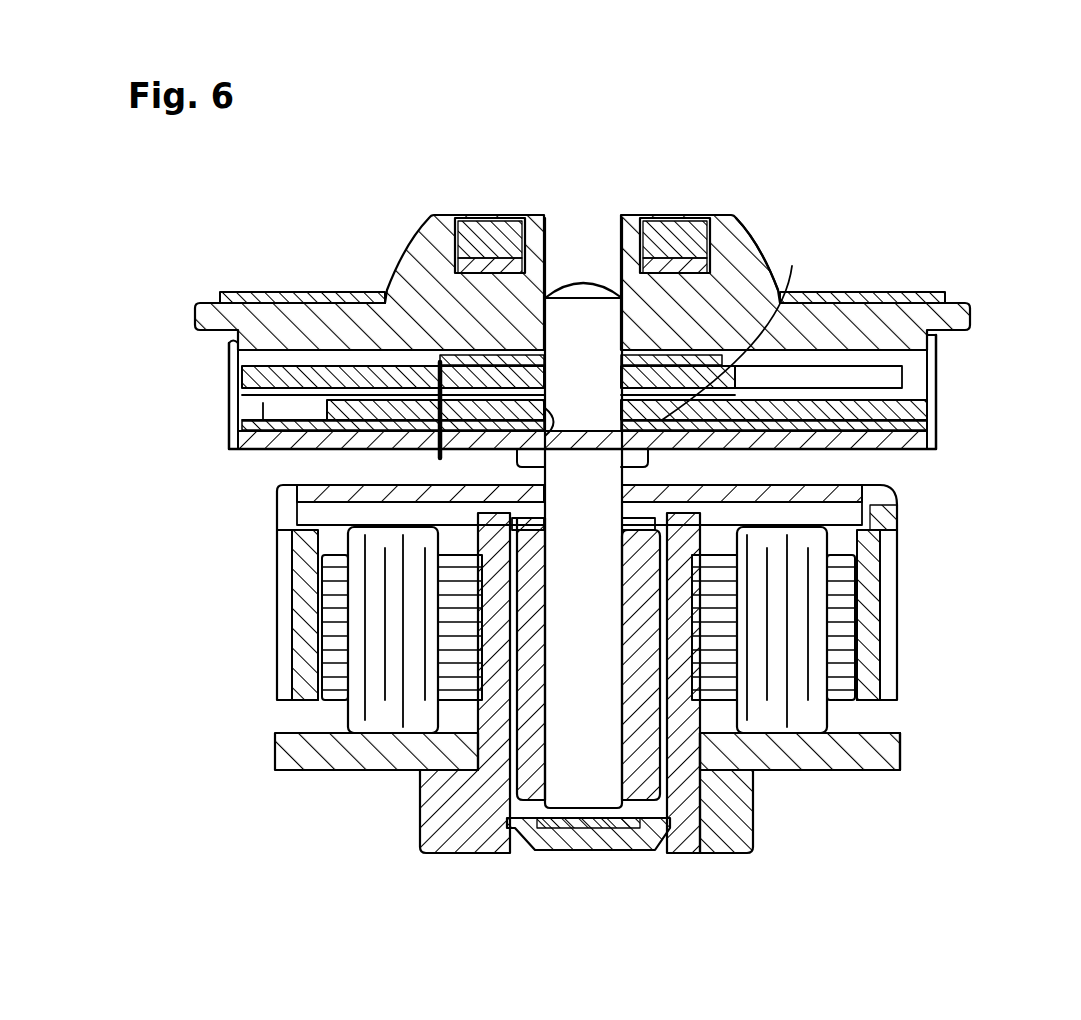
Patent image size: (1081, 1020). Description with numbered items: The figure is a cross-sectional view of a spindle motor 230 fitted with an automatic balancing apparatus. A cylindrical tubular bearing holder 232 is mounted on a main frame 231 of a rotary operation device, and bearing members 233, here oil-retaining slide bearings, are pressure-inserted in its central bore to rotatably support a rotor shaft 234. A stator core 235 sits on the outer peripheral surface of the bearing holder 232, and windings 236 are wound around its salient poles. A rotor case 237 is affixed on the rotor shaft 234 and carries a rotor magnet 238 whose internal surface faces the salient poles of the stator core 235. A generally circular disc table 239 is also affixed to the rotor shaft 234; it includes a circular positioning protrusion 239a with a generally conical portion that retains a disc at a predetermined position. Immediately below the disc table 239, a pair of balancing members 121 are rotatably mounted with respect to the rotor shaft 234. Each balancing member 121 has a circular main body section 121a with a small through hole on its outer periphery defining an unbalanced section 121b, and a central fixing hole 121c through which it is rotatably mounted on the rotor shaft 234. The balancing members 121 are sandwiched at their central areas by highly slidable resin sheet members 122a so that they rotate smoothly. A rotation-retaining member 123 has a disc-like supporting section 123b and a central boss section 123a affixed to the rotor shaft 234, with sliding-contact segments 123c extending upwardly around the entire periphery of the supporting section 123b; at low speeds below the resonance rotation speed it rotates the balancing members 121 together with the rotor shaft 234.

The balancing members 121 is at (890, 366).
The circular main body section 121a is at (268, 275).
The unbalanced section 121b is at (898, 272).
The fixing hole 121c is at (547, 430).
The resin sheet members 122a is at (441, 458).
The rotation-retaining member 123 is at (950, 436).
The central boss section 123a is at (636, 462).
The supporting section 123b is at (402, 440).
The sliding-contact segments 123c is at (223, 373).
The spindle motor 230 is at (262, 618).
The main frame 231 is at (812, 760).
The bearing holder 232 is at (463, 830).
The bearing members 233 is at (690, 830).
The rotor shaft 234 is at (584, 778).
The stator core 235 is at (837, 613).
The windings 236 is at (810, 756).
The rotor case 237 is at (300, 478).
The rotor magnet 238 is at (868, 658).
The disc table 239 is at (357, 313).
The positioning protrusion 239a is at (733, 238).